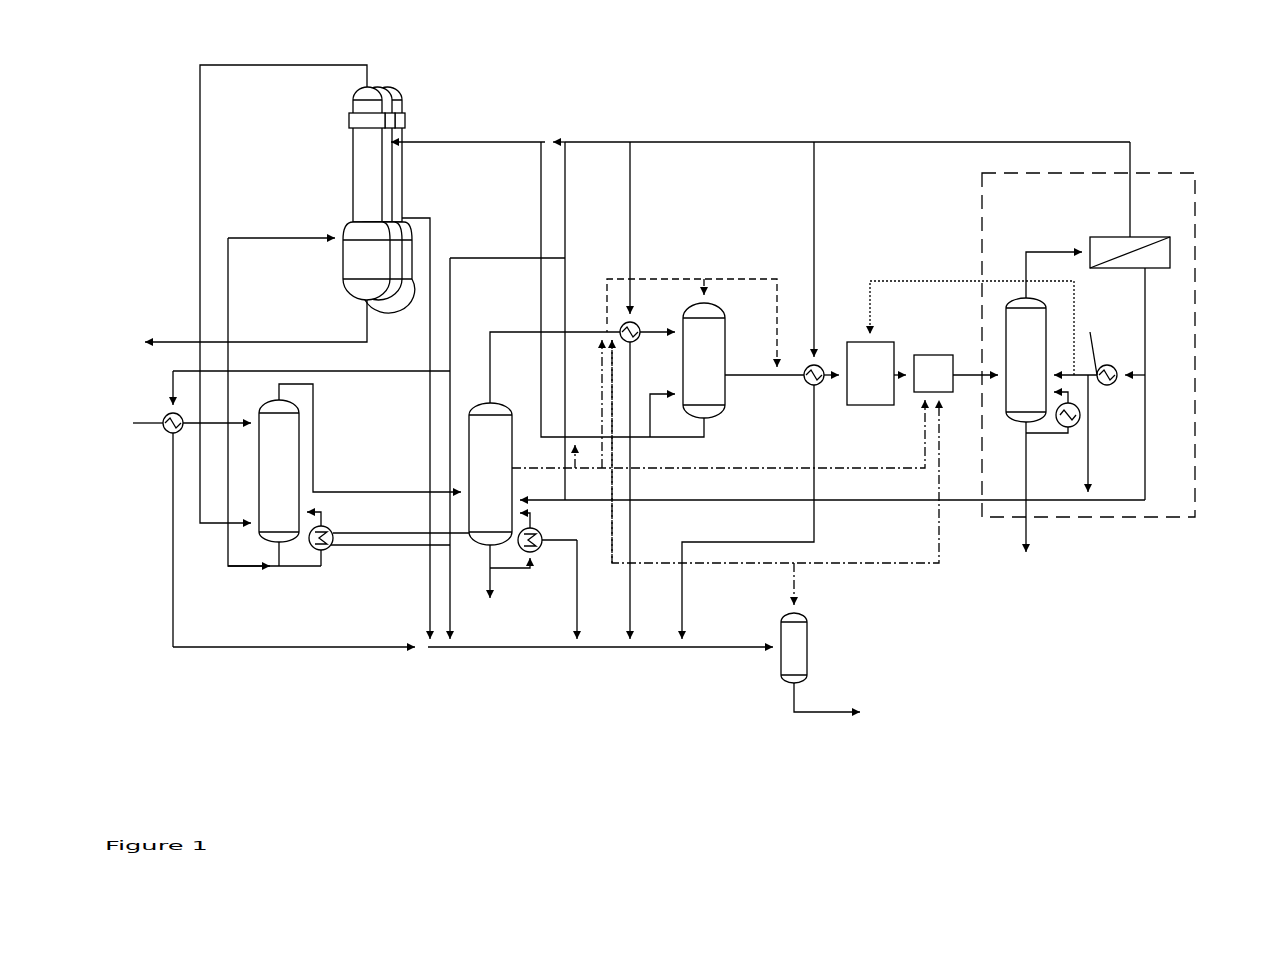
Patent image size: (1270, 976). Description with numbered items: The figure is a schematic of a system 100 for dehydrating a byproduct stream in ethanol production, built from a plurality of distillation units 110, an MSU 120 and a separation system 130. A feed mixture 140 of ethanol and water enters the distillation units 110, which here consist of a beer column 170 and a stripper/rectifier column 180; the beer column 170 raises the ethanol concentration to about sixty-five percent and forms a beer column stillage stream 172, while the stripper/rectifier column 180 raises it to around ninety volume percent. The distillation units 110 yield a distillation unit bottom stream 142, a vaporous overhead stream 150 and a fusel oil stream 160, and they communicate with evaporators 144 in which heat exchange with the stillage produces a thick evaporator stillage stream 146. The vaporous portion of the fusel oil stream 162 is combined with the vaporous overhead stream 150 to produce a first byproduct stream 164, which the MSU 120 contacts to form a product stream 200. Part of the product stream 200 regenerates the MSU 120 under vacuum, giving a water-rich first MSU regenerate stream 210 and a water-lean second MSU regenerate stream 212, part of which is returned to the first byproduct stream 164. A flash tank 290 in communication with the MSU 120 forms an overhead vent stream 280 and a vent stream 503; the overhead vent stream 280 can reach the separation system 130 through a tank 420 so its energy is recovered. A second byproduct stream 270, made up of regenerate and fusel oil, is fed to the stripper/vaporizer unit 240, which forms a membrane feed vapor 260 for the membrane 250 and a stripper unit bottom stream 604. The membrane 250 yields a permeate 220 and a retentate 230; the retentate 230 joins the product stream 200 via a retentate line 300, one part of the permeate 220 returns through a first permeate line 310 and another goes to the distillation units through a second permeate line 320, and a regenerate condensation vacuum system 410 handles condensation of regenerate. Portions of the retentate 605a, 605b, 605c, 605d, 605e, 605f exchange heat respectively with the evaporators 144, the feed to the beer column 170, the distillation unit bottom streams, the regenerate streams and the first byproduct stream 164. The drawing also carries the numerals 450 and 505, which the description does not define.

The system 100 is at (1017, 727).
The distillation units 110 is at (361, 455).
The MSU 120 is at (704, 360).
The separation system 130 is at (973, 213).
The feed mixture 140 is at (150, 422).
The distillation unit bottom stream 142 is at (489, 587).
The evaporators 144 is at (350, 178).
The evaporator stillage stream 146 is at (167, 343).
The vaporous overhead stream 150 is at (513, 335).
The fusel oil stream 160 is at (885, 465).
The vaporous portion of the fusel oil stream 162 is at (600, 377).
The first byproduct stream 164 is at (660, 340).
The beer column 170 is at (279, 471).
The beer column stillage stream 172 is at (260, 564).
The stripper/rectifier column 180 is at (490, 474).
The product stream 200 is at (665, 440).
The first MSU regenerate stream 210 is at (748, 380).
The second MSU regenerate stream 212 is at (748, 275).
The permeate 220 is at (1137, 327).
The retentate 230 is at (1132, 182).
The stripper/vaporizer unit 240 is at (1026, 360).
The membrane 250 is at (1170, 250).
The membrane feed vapor 260 is at (1055, 250).
The second byproduct stream 270 is at (830, 370).
The overhead vent stream 280 is at (855, 562).
The flash tank 290 is at (808, 655).
The retentate line 300 is at (847, 133).
The first permeate line 310 is at (940, 280).
The second permeate line 320 is at (1150, 480).
The regenerate condensation vacuum system 410 is at (880, 340).
The tank 420 is at (937, 353).
The feed heat exchanger 450 is at (162, 433).
The vent stream 503 is at (838, 712).
The reactor feed line 505 is at (302, 62).
The stripper unit bottom stream 604 is at (1025, 530).
The portion of the retentate 605a is at (435, 140).
The portion of the retentate 605b is at (370, 368).
The portion of the retentate 605c is at (372, 535).
The portion of the retentate 605d is at (563, 513).
The portion of the retentate 605e is at (817, 213).
The portion of the retentate 605f is at (630, 213).